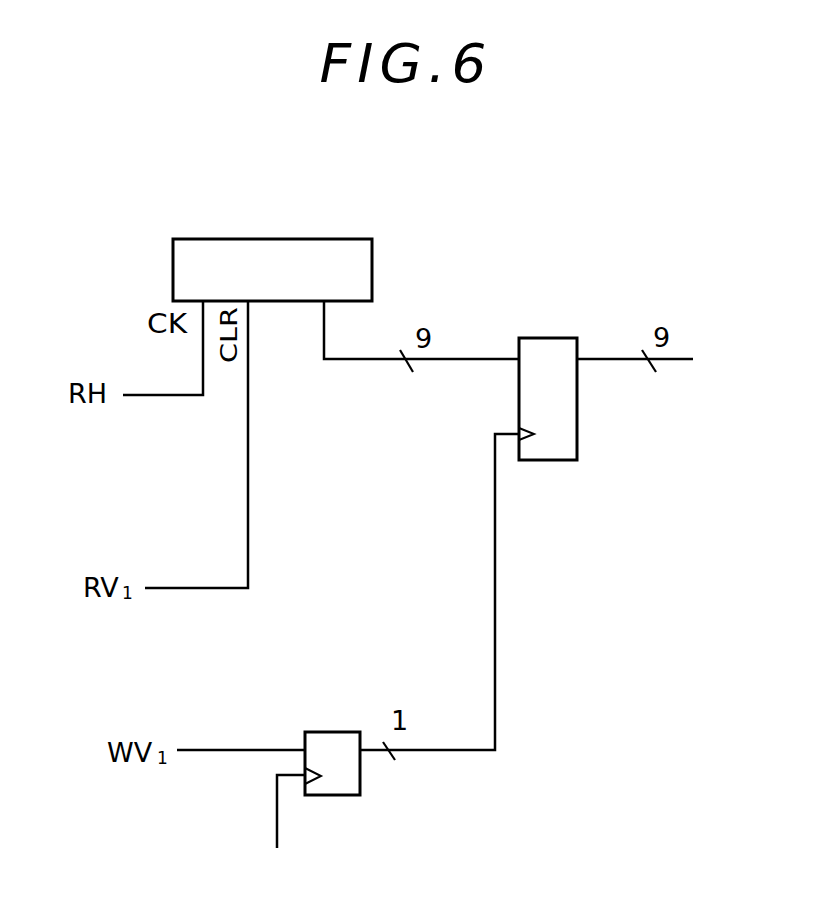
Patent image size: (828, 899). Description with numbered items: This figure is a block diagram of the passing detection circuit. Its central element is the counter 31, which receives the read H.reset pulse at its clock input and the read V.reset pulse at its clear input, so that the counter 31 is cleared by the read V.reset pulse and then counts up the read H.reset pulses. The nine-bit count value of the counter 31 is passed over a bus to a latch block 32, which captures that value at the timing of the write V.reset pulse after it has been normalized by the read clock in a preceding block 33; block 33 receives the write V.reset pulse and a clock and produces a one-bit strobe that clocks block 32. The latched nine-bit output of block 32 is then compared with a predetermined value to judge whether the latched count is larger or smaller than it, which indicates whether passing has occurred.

The counter 31 is at (267, 239).
The register (latch) 32 is at (543, 338).
The flip-flop 33 is at (330, 732).